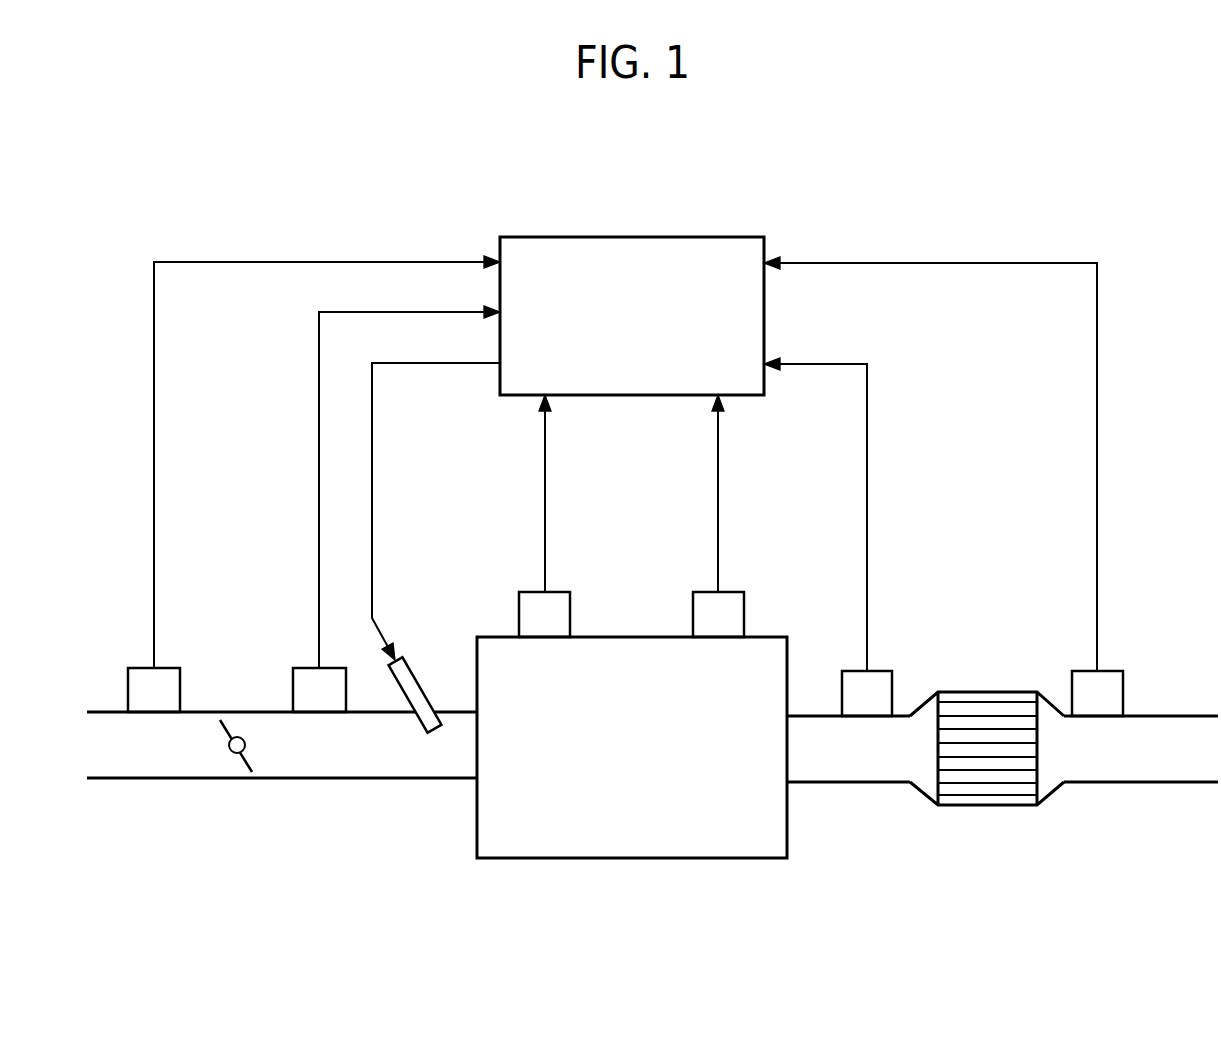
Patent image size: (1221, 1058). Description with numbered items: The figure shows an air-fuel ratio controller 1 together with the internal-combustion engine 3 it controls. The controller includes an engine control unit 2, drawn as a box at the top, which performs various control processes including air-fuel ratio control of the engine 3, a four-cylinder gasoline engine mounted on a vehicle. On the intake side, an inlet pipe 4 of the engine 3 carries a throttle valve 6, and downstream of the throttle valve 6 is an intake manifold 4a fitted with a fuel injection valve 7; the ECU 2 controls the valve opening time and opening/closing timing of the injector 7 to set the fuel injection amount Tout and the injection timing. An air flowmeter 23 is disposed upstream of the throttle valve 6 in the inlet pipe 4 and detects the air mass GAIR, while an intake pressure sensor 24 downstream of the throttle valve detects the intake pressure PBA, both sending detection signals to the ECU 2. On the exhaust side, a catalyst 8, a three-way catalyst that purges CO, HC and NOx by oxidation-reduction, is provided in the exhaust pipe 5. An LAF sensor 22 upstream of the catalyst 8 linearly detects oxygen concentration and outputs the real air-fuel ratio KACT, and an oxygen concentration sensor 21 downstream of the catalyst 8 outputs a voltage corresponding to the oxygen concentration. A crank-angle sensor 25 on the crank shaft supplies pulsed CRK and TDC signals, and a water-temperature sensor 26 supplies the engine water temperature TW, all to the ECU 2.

The air-fuel ratio controller 1 is at (484, 160).
The engine control unit 2 is at (648, 237).
The internal-combustion engine 3 is at (622, 637).
The inlet pipe 4 is at (240, 712).
The intake manifold 4a is at (373, 778).
The exhaust pipe 5 is at (860, 782).
The throttle valve 6 is at (232, 760).
The fuel injection valve 7 is at (408, 665).
The catalyst 8 is at (990, 692).
The oxygen concentration sensor 21 is at (1115, 671).
The LAF sensor 22 is at (880, 671).
The air flowmeter 23 is at (140, 668).
The intake pressure sensor 24 is at (305, 668).
The crank-angle sensor 25 is at (560, 592).
The water-temperature sensor 26 is at (735, 592).